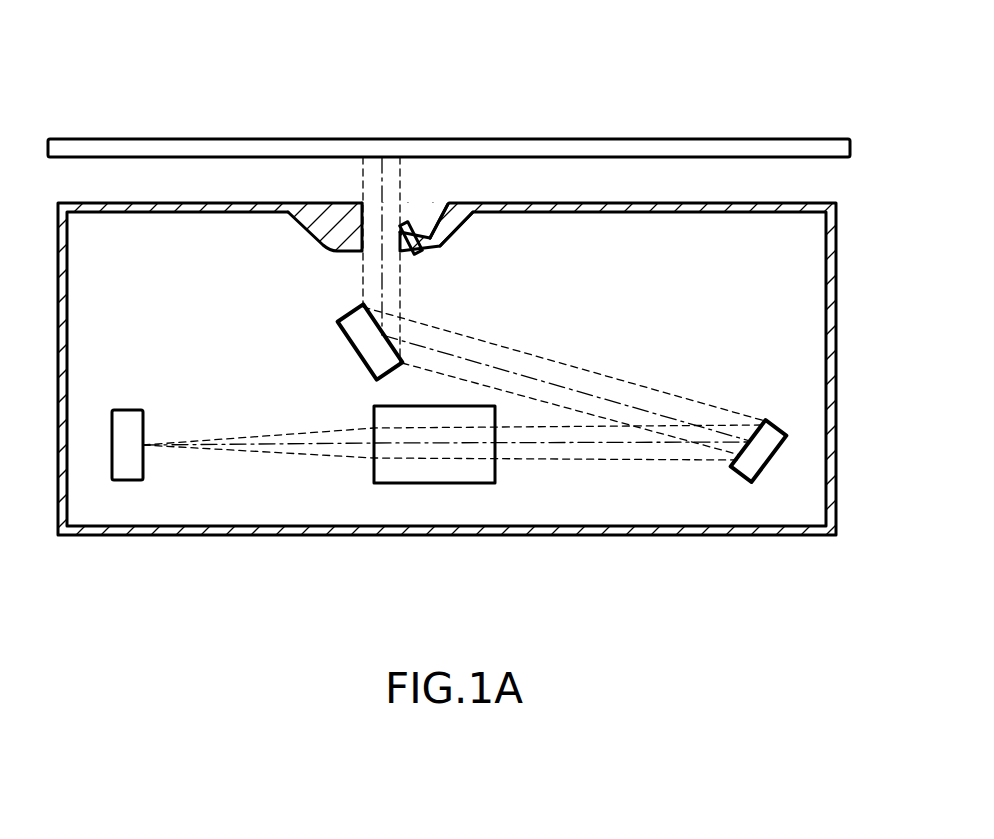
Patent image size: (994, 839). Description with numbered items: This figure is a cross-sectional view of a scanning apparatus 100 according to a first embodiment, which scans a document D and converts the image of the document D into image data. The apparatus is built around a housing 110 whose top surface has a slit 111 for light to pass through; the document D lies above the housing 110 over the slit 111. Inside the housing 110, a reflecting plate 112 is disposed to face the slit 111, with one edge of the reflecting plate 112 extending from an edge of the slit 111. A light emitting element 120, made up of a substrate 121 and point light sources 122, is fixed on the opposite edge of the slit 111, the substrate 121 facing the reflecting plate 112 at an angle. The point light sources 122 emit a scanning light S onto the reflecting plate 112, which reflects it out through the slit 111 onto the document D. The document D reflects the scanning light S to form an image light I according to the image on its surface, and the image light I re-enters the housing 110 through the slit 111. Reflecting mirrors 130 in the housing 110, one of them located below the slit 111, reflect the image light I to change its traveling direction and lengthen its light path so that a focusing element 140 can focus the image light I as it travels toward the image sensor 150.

The scanning apparatus 100 is at (200, 38).
The housing 110 is at (838, 352).
The slit 111 is at (359, 199).
The reflecting plate 112 is at (435, 222).
The light emitting element 120 is at (500, 80).
The substrate 121 is at (413, 227).
The point light sources 122 is at (425, 230).
The reflecting mirrors 130 is at (362, 333).
The focusing element 140 is at (478, 473).
The image sensor 150 is at (124, 410).
The document D is at (763, 140).
The scanning light S is at (390, 260).
The image light I is at (454, 366).